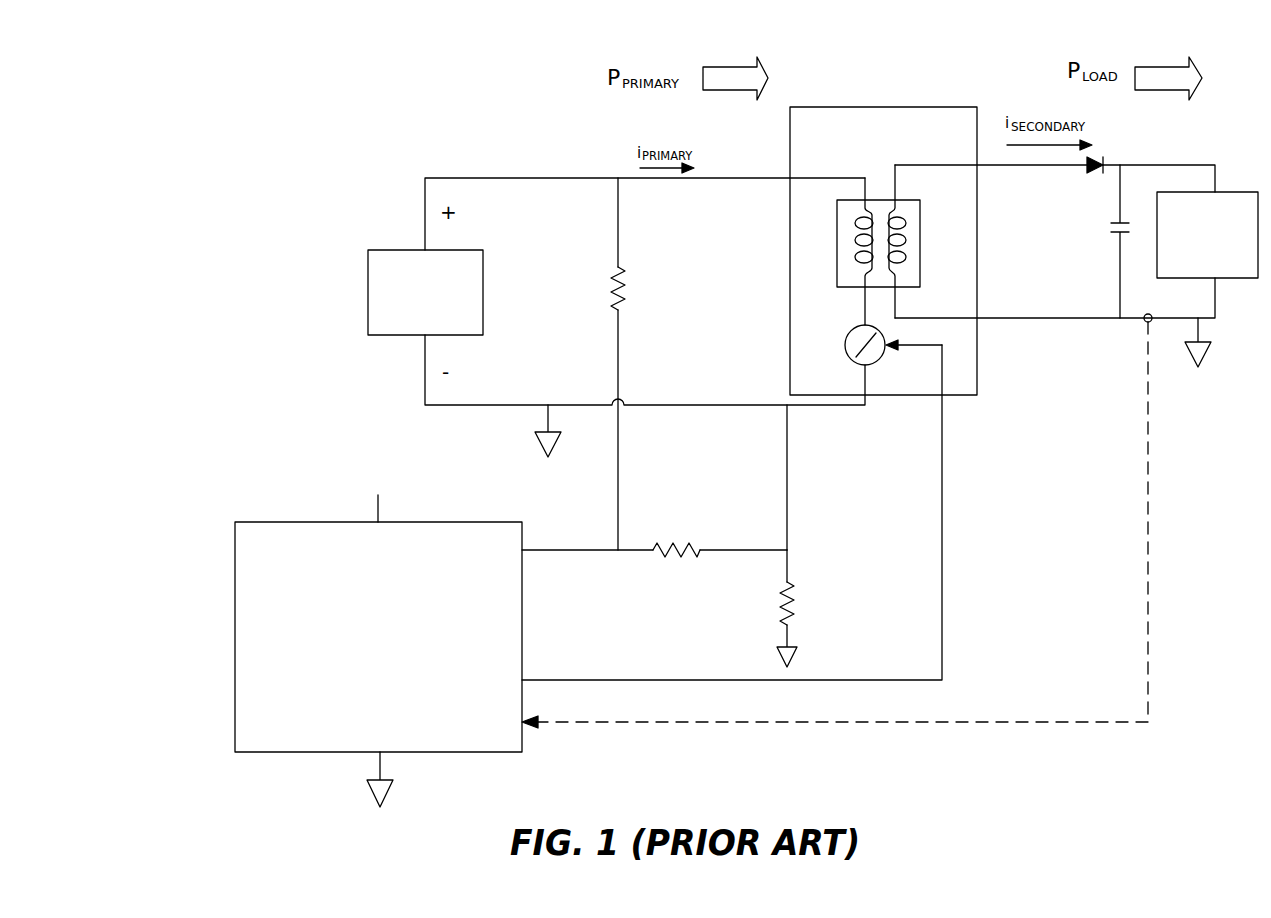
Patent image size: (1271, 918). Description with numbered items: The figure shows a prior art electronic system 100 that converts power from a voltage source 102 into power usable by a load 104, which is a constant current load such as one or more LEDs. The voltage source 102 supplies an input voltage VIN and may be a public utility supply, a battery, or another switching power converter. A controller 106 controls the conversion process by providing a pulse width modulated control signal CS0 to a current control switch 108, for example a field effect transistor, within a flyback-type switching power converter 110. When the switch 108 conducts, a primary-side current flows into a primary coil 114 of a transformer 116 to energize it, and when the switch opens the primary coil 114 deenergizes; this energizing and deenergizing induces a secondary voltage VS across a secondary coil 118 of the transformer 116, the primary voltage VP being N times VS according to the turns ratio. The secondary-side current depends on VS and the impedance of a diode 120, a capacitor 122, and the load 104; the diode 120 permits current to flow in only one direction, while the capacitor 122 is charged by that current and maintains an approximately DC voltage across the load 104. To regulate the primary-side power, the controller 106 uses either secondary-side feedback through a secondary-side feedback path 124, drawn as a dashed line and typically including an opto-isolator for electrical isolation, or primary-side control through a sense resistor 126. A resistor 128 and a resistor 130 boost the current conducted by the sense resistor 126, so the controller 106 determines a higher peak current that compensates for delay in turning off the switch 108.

The electronic system 100 is at (280, 126).
The voltage source 102 is at (368, 297).
The load 104 is at (1207, 235).
The controller 106 is at (410, 637).
The current control switch 108 is at (880, 352).
The switching power converter 110 is at (892, 107).
The primary coil 114 is at (863, 264).
The transformer 116 is at (877, 226).
The secondary coil 118 is at (898, 262).
The diode 120 is at (1100, 170).
The capacitor 122 is at (1117, 233).
The secondary-side feedback path 124 is at (1150, 536).
The sense resistor 126 is at (784, 621).
The resistor 128 is at (616, 274).
The resistor 130 is at (672, 546).